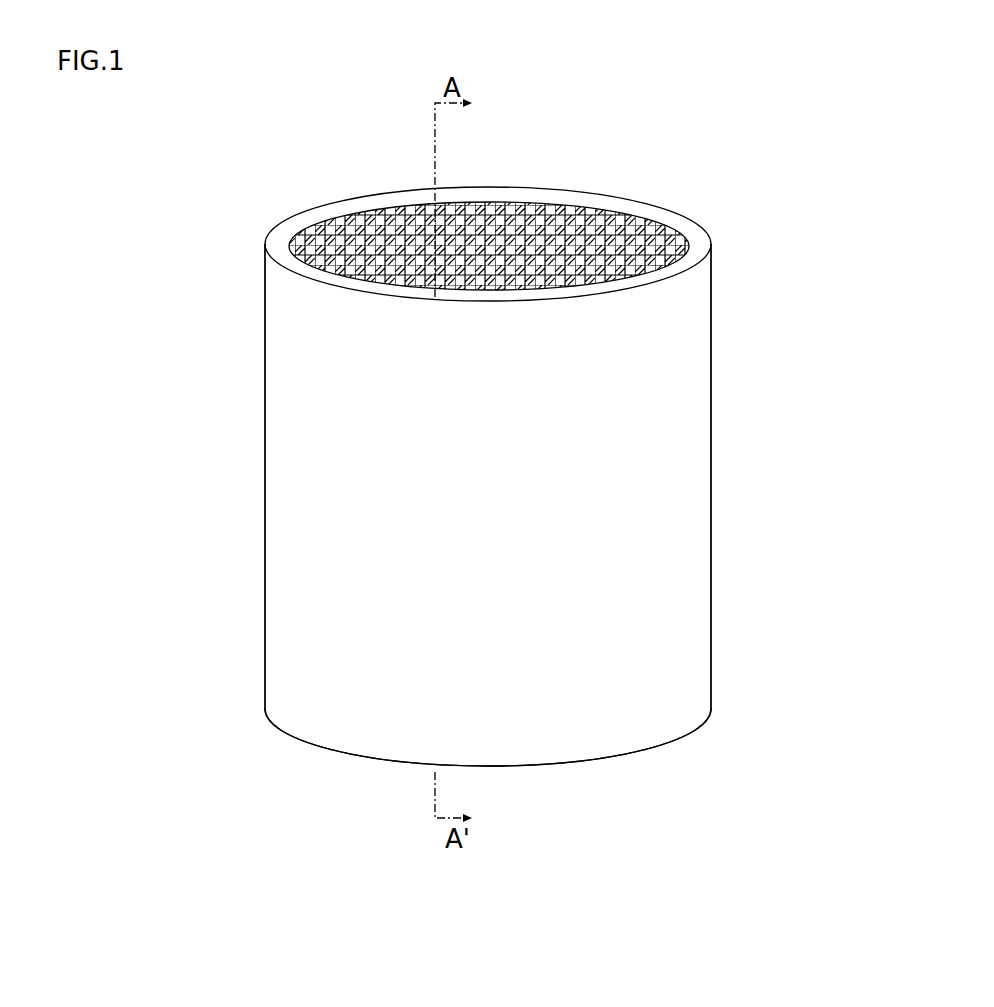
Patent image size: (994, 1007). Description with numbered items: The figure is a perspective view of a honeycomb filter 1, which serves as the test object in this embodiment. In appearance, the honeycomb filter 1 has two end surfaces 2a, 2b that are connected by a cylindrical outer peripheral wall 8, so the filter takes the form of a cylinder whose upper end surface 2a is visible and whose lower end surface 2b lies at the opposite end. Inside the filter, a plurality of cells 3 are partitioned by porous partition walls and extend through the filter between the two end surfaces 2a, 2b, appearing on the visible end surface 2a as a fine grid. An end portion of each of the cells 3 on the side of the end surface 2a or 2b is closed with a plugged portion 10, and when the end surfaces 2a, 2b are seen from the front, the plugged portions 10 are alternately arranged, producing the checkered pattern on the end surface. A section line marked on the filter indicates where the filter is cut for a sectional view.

The honeycomb filter 1 is at (765, 249).
The end surface 2a is at (605, 212).
The end surface 2b is at (672, 745).
The cells 3 is at (405, 212).
The outer peripheral wall 8 is at (693, 468).
The plugged portion 10 is at (493, 210).